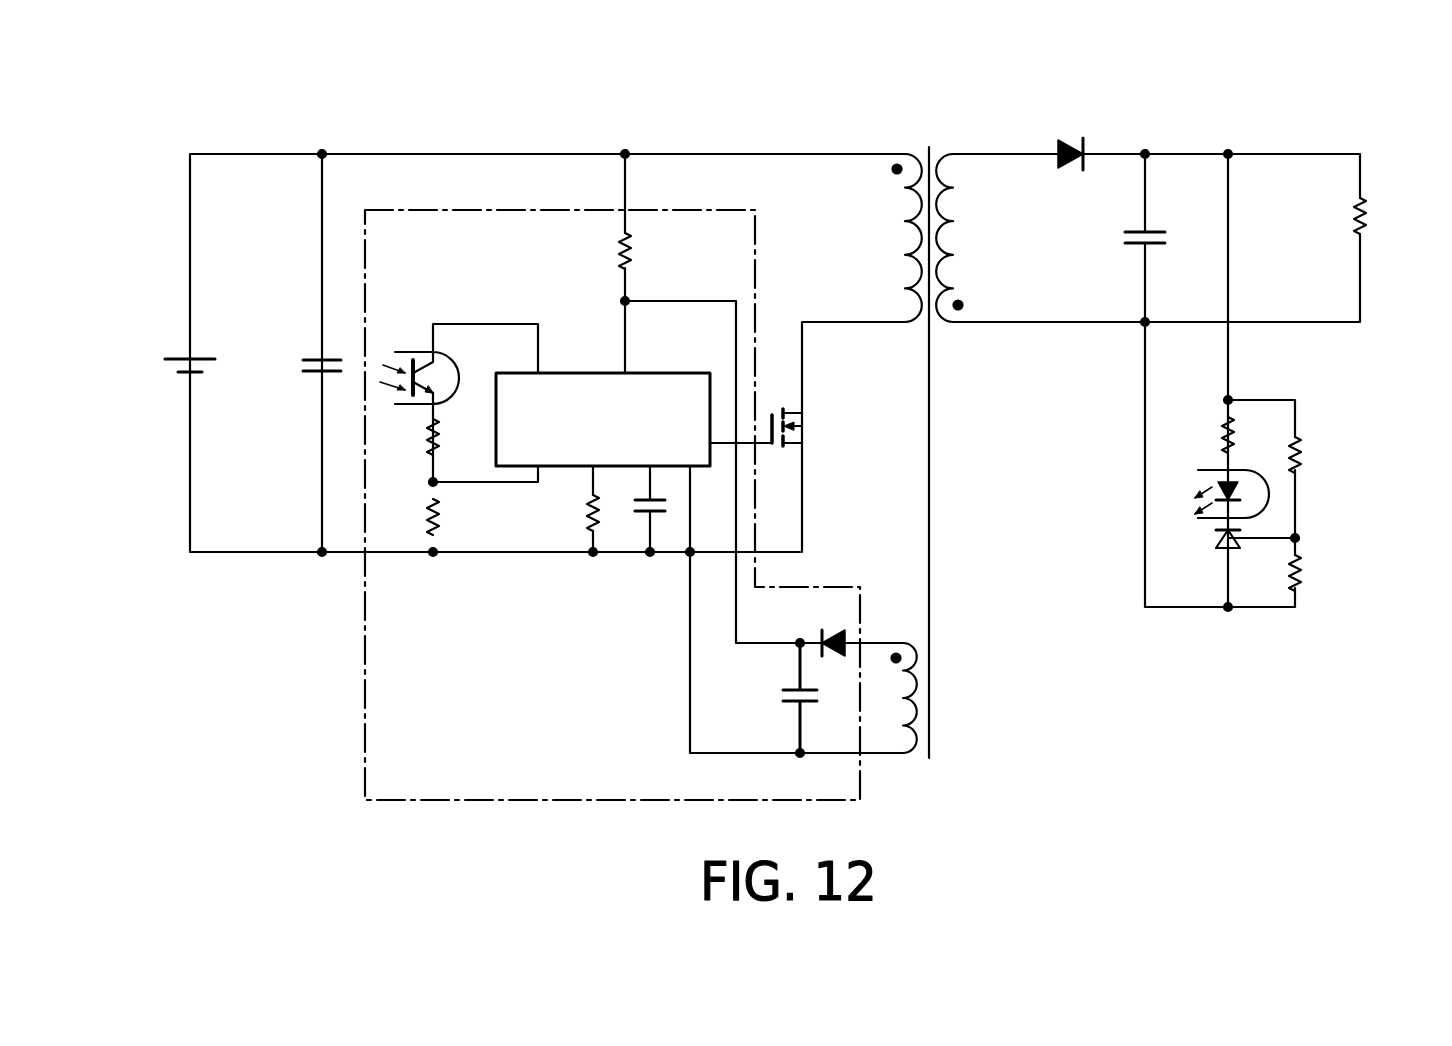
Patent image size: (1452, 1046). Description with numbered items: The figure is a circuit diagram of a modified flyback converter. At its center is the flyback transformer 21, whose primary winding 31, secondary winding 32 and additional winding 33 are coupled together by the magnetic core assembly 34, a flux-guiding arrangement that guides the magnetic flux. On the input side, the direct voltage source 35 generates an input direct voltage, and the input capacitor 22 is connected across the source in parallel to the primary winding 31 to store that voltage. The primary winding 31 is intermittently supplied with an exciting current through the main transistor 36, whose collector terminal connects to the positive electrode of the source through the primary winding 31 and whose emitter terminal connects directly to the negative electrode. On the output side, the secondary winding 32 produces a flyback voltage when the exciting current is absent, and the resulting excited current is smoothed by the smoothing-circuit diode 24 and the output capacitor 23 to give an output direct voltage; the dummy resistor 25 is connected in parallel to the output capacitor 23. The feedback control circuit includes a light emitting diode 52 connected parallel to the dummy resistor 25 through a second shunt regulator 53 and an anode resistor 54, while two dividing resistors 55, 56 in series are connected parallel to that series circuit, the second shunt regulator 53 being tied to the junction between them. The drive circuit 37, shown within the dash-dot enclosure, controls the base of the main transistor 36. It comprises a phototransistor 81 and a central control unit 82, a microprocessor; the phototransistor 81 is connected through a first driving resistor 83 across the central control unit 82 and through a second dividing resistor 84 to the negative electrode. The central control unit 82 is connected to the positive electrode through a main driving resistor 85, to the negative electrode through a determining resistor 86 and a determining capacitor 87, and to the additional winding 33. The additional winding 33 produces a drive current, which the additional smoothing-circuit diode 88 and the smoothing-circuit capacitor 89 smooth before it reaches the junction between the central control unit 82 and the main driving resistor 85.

The flyback transformer 21 is at (927, 144).
The input capacitor 22 is at (315, 358).
The output capacitor 23 is at (1150, 234).
The smoothing-circuit diode 24 is at (1060, 140).
The dummy resistor 25 is at (1363, 212).
The primary winding 31 is at (902, 238).
The secondary winding 32 is at (958, 232).
The additional winding 33 is at (911, 760).
The magnetic core assembly 34 is at (931, 494).
The direct voltage source 35 is at (182, 357).
The main transistor 36 is at (800, 418).
The drive circuit 37 is at (364, 769).
The light emitting diode 52 is at (1249, 470).
The second shunt regulator 53 is at (1218, 550).
The anode resistor 54 is at (1224, 440).
The dividing resistor 55 is at (1300, 460).
The dividing resistor 56 is at (1300, 570).
The phototransistor 81 is at (448, 352).
The central control unit 82 is at (580, 372).
The first driving resistor 83 is at (432, 440).
The second dividing resistor 84 is at (437, 516).
The main driving resistor 85 is at (622, 250).
The determining resistor 86 is at (589, 515).
The determining capacitor 87 is at (656, 525).
The additional smoothing-circuit diode 88 is at (832, 634).
The smoothing-circuit capacitor 89 is at (783, 700).